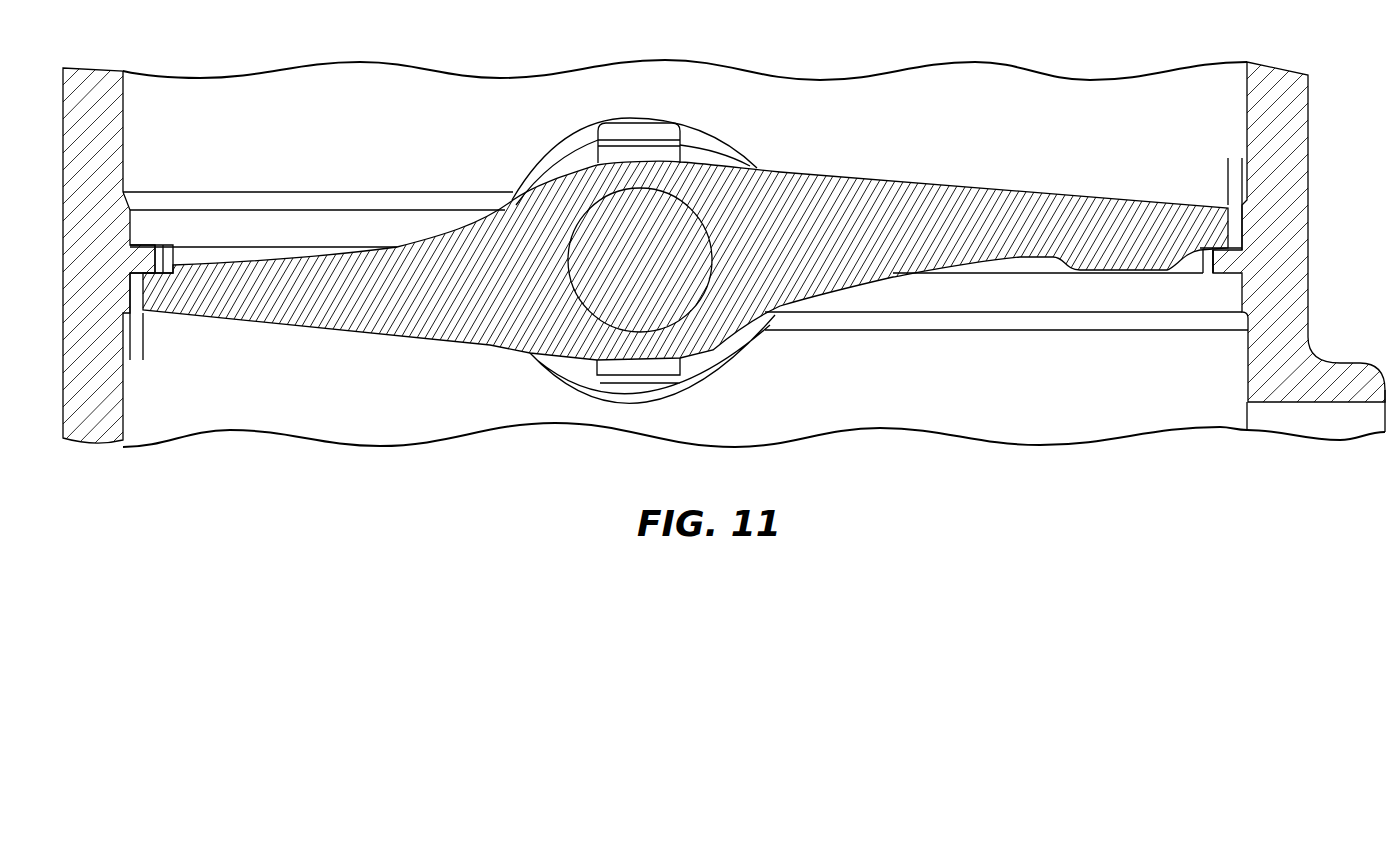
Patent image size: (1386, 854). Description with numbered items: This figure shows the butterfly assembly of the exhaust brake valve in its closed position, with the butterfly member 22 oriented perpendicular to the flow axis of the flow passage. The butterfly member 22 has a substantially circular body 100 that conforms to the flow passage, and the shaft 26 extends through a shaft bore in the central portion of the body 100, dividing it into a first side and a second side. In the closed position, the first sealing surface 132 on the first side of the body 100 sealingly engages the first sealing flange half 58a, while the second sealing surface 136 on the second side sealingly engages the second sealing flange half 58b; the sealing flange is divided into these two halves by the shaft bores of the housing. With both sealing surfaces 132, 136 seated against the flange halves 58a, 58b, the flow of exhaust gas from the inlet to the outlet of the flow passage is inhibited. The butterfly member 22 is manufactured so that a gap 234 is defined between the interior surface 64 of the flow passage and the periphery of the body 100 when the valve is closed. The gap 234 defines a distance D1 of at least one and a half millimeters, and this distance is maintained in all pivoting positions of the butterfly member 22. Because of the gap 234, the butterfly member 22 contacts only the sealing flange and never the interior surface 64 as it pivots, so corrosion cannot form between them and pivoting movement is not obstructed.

The butterfly member 22 is at (456, 365).
The shaft 26 is at (663, 228).
The first sealing flange half 58a is at (1227, 258).
The second sealing flange half 58b is at (141, 257).
The interior surface 64 is at (1247, 103).
The body 100 is at (823, 200).
The first sealing surface 132 is at (1208, 256).
The second sealing surface 136 is at (158, 257).
The gap 234 is at (122, 283).
The distance D1 is at (190, 345).